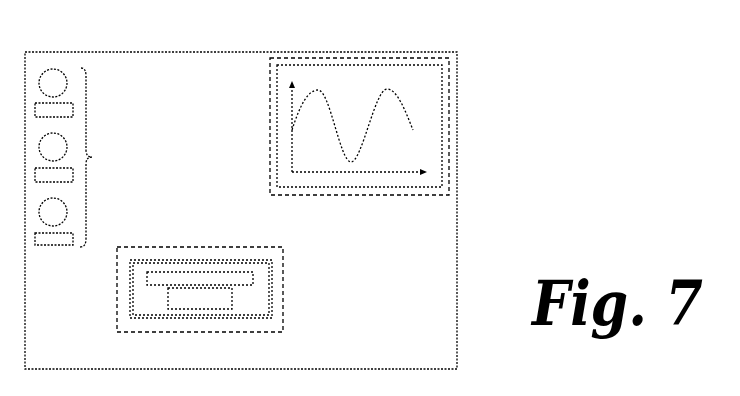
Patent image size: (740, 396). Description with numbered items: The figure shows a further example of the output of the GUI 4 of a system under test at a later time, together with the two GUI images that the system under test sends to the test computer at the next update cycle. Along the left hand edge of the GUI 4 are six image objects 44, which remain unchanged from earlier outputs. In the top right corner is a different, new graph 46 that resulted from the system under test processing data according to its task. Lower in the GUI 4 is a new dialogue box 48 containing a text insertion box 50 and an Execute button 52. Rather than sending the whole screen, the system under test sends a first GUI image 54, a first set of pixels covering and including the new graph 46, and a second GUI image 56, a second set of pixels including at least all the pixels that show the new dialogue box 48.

The GUI 4 is at (240, 52).
The image objects 44 is at (93, 157).
The graph 46 is at (277, 135).
The first GUI image 54 is at (269, 108).
The dialogue box 48 is at (284, 268).
The second GUI image 56 is at (284, 300).
The text insertion box 50 is at (202, 272).
The Execute button 52 is at (201, 310).